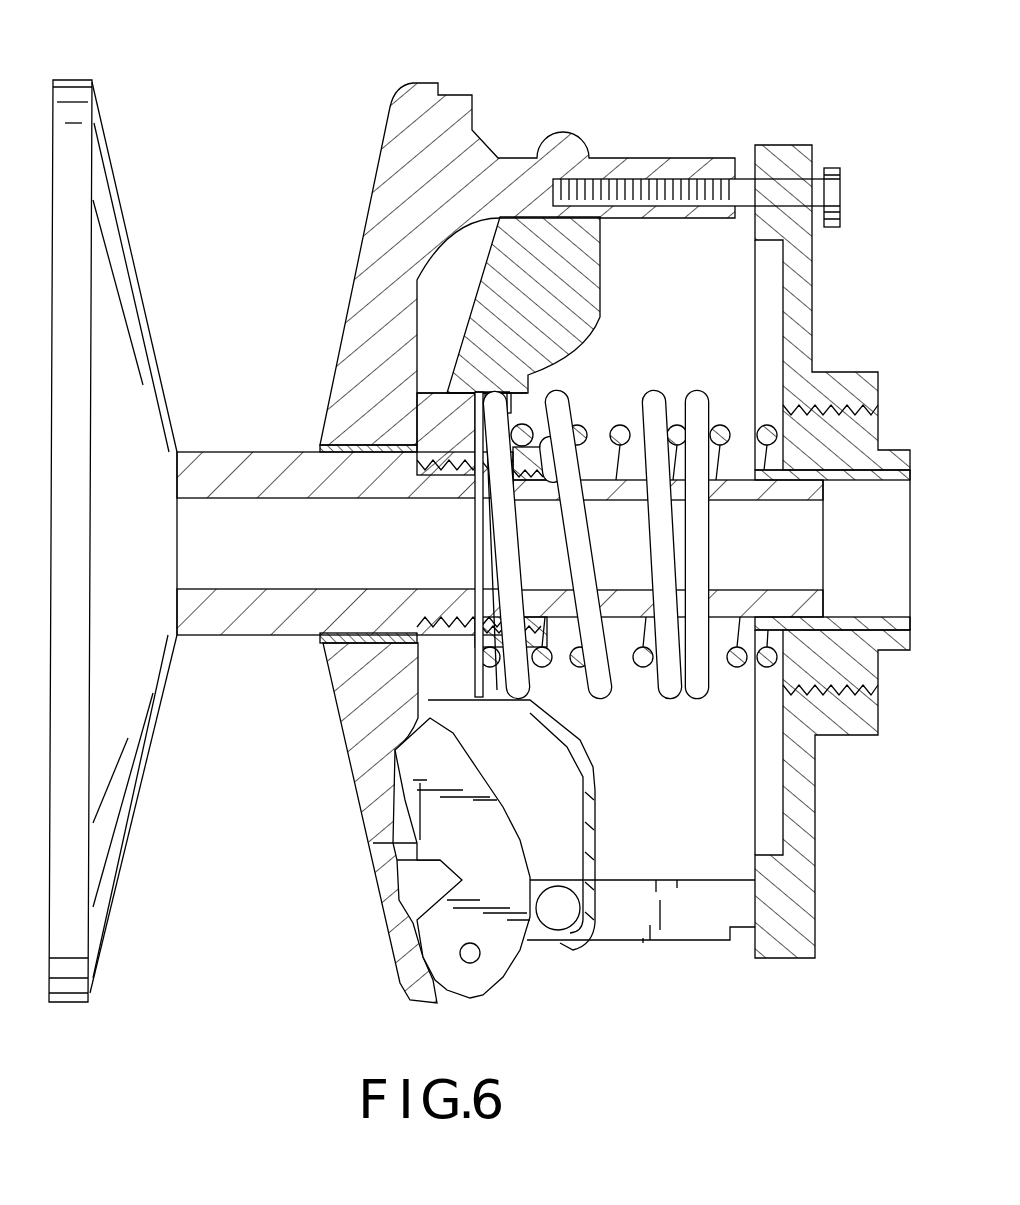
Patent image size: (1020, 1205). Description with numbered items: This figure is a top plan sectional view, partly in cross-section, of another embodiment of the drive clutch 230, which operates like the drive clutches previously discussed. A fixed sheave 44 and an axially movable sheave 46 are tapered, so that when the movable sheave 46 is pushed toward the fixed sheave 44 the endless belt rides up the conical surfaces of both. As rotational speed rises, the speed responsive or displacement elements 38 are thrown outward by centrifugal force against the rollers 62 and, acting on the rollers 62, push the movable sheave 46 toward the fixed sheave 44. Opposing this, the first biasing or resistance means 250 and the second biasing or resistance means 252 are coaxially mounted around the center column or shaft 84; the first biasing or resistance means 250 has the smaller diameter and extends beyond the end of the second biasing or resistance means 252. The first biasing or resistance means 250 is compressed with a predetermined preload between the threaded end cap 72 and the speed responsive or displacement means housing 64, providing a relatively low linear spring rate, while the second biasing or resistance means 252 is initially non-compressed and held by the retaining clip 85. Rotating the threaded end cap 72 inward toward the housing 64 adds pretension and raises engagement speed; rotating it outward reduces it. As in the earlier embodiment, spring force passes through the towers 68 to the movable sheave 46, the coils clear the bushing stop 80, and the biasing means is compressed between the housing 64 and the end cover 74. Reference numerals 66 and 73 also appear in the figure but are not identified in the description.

The drive clutch 230 is at (515, 80).
The towers 68 is at (698, 160).
The retaining clip 85 is at (600, 330).
The first biasing or resistance means 250 is at (716, 422).
The center column or shaft 84 is at (597, 442).
The threaded end cap 72 is at (878, 430).
The bushing stop 80 is at (552, 480).
The sleeve 73 is at (845, 617).
The second biasing or resistance means 252 is at (670, 700).
The pawl assembly 66 is at (558, 810).
The speed responsive or displacement means housing 64 is at (600, 836).
The end cover 74 is at (815, 818).
The fixed sheave 44 is at (100, 957).
The axially movable sheave 46 is at (405, 975).
The speed responsive or displacement elements 38 is at (527, 967).
The rollers 62 is at (556, 932).